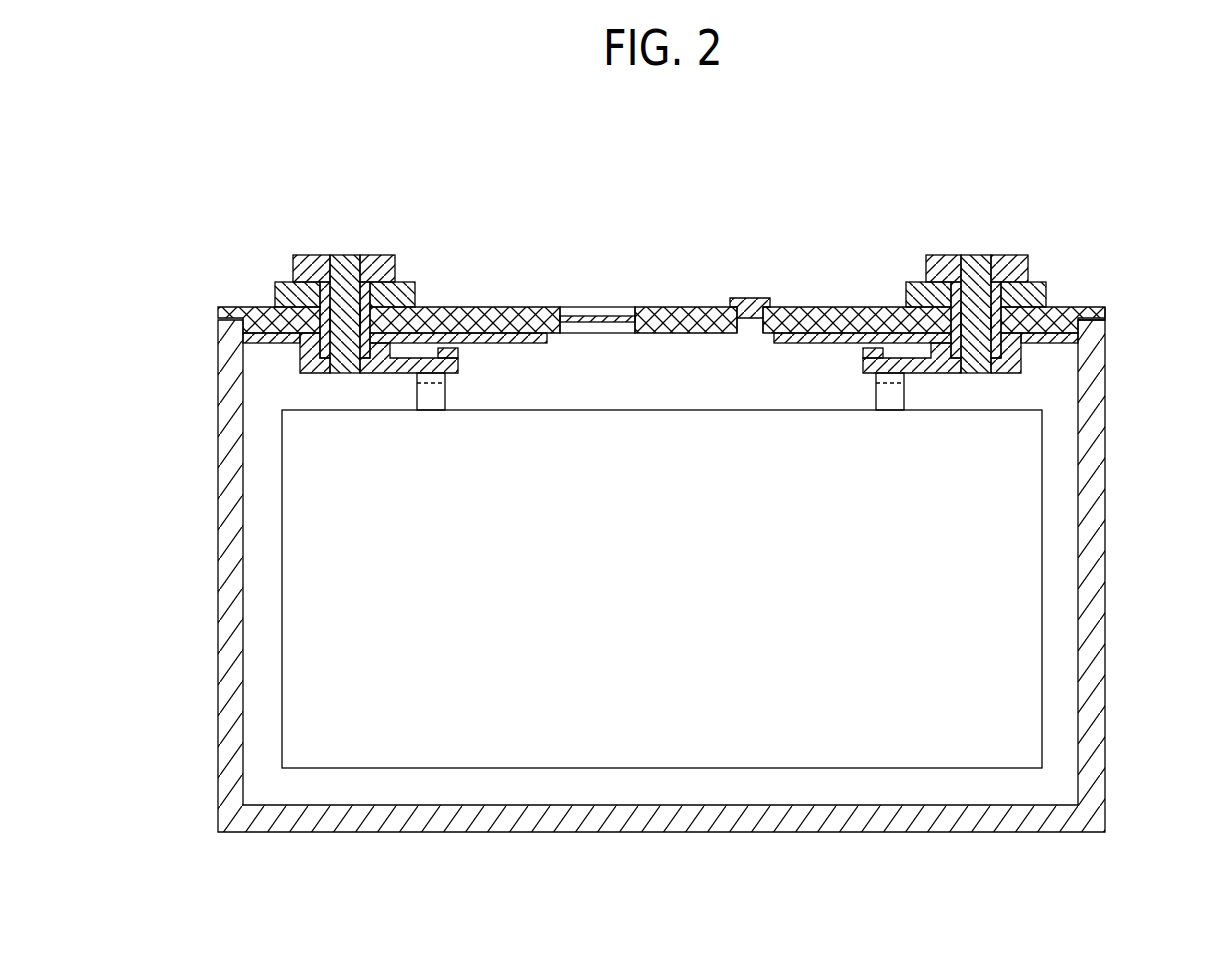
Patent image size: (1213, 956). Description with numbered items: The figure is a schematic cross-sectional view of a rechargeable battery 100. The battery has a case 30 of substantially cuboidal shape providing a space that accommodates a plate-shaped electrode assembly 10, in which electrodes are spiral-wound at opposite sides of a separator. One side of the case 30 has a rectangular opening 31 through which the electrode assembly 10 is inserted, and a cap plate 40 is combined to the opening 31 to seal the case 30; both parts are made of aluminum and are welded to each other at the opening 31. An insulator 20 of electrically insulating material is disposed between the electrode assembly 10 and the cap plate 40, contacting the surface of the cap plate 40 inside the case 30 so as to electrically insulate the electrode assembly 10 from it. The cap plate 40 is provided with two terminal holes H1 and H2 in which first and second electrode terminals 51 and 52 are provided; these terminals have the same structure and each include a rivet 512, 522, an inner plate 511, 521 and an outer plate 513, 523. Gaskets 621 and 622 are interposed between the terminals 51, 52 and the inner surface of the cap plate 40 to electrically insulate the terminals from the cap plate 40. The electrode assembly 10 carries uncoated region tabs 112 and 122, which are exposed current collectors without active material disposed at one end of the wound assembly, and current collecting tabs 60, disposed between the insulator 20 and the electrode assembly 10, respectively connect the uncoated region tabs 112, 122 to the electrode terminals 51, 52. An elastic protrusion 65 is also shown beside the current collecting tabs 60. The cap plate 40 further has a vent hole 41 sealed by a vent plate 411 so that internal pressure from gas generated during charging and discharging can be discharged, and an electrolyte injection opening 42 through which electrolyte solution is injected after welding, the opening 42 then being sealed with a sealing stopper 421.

The rechargeable battery 100 is at (1098, 222).
The electrode assembly 10 is at (1042, 473).
The uncoated region tab 112 is at (433, 400).
The uncoated region tab 122 is at (892, 400).
The insulator 20 is at (268, 343).
The case 30 is at (1105, 613).
The opening 31 is at (1074, 307).
The cap plate 40 is at (658, 310).
The vent hole 41 is at (576, 310).
The vent plate 411 is at (612, 318).
The electrolyte injection opening 42 is at (740, 326).
The sealing stopper 421 is at (748, 297).
The first electrode terminal 51 is at (245, 183).
The inner plate 511 is at (340, 272).
The rivet 512 is at (357, 272).
The outer plate 513 is at (300, 256).
The second electrode terminal 52 is at (1078, 183).
The inner plate 521 is at (985, 270).
The rivet 522 is at (968, 258).
The outer plate 523 is at (1023, 258).
The current collecting tab 60 is at (385, 372).
The gasket 621 is at (378, 292).
The gasket 622 is at (938, 292).
The elastic protrusion 65 is at (458, 353).
The terminal hole H1 is at (350, 320).
The terminal hole H2 is at (968, 320).